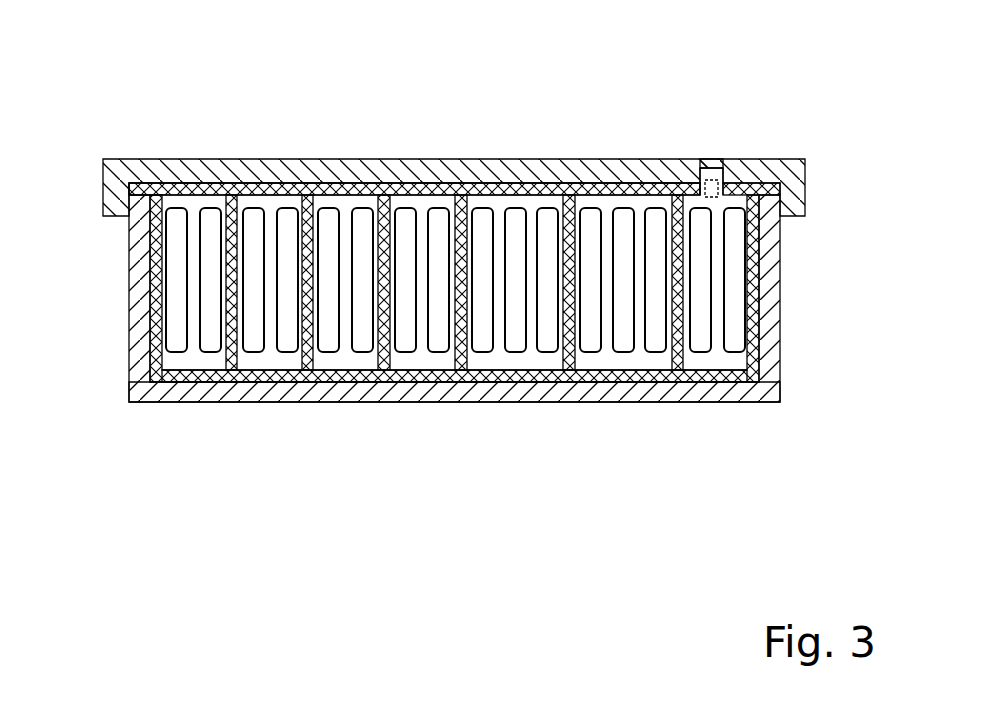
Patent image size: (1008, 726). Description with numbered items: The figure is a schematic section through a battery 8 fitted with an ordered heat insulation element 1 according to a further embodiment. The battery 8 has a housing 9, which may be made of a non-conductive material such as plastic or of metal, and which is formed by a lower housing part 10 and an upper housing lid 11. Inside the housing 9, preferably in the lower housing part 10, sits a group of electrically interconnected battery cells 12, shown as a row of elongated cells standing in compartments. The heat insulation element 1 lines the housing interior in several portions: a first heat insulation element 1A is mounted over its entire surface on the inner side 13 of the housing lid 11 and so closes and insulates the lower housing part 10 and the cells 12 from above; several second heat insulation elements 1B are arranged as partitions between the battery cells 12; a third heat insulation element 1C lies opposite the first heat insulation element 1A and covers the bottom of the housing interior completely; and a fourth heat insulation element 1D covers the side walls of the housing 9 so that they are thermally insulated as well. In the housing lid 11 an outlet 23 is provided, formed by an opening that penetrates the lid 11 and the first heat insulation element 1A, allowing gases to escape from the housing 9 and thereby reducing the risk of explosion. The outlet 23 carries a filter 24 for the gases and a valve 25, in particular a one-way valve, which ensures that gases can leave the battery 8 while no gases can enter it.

The heat insulation element 1 is at (412, 282).
The first heat insulation element 1A is at (300, 183).
The second heat insulation element 1B is at (232, 362).
The third heat insulation element 1C is at (280, 383).
The fourth heat insulation element 1D is at (156, 292).
The battery 8 is at (440, 259).
The housing 9 is at (763, 368).
The lower housing part 10 is at (138, 357).
The housing lid 11 is at (183, 160).
The battery cell 12 is at (178, 333).
The inner side 13 is at (398, 186).
The outlet 23 is at (700, 168).
The filter 24 is at (712, 165).
The valve 25 is at (718, 180).